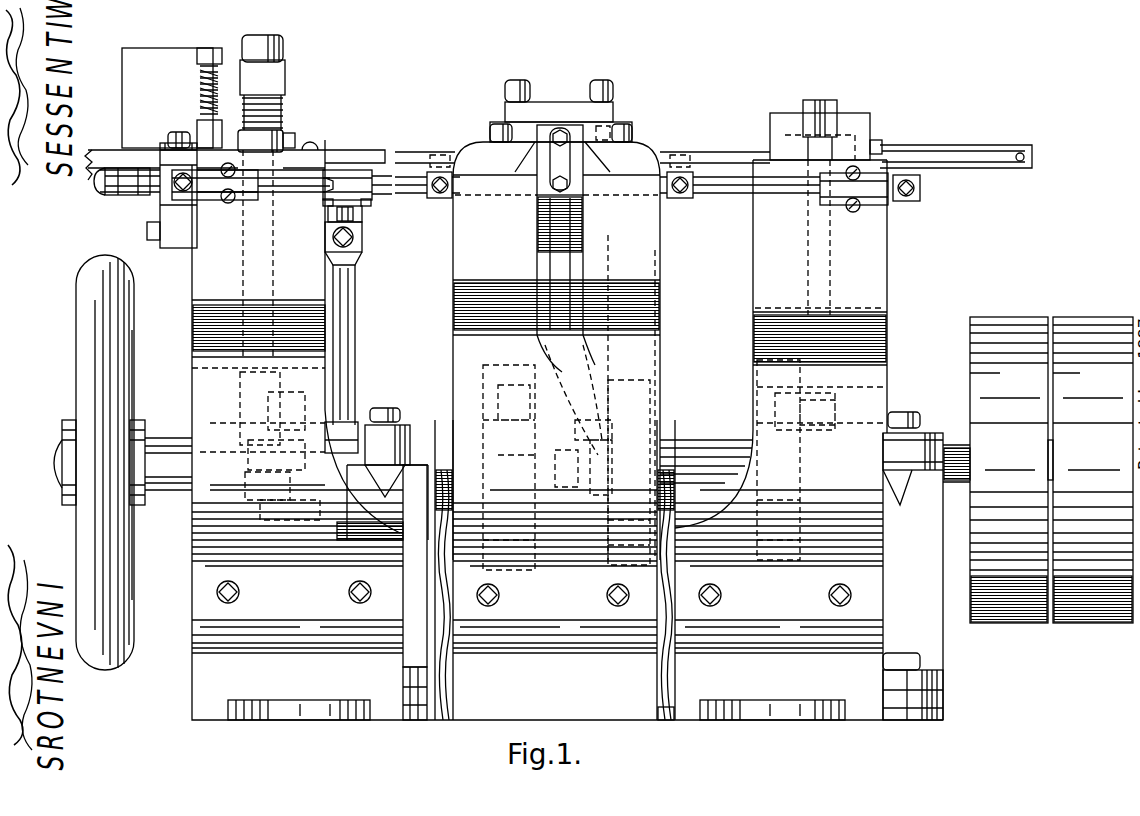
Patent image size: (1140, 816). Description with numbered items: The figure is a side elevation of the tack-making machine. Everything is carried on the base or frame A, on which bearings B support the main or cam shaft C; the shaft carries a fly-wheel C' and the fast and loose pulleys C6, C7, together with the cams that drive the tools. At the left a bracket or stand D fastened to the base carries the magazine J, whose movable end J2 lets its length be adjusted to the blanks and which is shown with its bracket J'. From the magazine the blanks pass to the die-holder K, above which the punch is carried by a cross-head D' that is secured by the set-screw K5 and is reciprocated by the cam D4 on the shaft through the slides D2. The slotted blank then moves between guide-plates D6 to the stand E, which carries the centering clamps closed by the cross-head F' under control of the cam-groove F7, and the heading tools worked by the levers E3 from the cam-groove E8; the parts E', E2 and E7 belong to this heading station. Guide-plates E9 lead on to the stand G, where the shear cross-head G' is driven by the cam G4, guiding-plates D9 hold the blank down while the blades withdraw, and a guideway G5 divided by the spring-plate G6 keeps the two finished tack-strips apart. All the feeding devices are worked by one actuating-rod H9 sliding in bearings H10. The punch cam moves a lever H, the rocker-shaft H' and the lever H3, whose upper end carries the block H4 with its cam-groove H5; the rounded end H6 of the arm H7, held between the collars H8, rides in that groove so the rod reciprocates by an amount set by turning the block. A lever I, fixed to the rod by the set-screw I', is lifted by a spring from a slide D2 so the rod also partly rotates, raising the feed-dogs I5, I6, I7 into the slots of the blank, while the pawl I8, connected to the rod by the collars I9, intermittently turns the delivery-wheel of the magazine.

The base or frame A is at (567, 442).
The bearings B is at (640, 564).
The main or cam shaft C is at (557, 456).
The fly-wheel C' is at (99, 462).
The fast pulley C6 is at (1011, 470).
The loose pulley C7 is at (1093, 470).
The bracket or stand D is at (296, 336).
The cross-head D' is at (262, 82).
The rods or slides D2 is at (248, 302).
The cam D4 is at (305, 460).
The guide-plates D6 is at (338, 160).
The guiding-plates D9 is at (762, 160).
The stand E is at (556, 351).
The stem guide E' is at (551, 160).
The cylinder head shoulders E2 is at (558, 157).
The levers E3 is at (572, 228).
The passage E7 is at (602, 438).
The cam-groove E8 is at (640, 530).
The guide-plates E9 is at (560, 148).
The cross-head F' is at (561, 111).
The cam-groove F7 is at (520, 448).
The stand G is at (781, 344).
The cross-head G' is at (826, 126).
The cam G4 is at (790, 490).
The guideway G5 is at (956, 147).
The spring-plate G6 is at (1018, 163).
The lever H is at (331, 237).
The rocker-shaft H' is at (860, 189).
The lever H3 is at (348, 317).
The block H4 is at (360, 214).
The cam-groove H5 is at (356, 228).
The roll or rounded end H6 is at (330, 216).
The arm H7 is at (355, 152).
The collars H8 is at (346, 209).
The actuating-rod or feed-rod H9 is at (288, 193).
The bearings H10 is at (220, 183).
The lever I is at (178, 195).
The set-screw I' is at (180, 195).
The feed-dog I5 is at (436, 200).
The feed-dog I6 is at (688, 200).
The feed-dog I7 is at (912, 201).
The feed dog or pawl I8 is at (128, 194).
The collars I9 is at (122, 173).
The magazine J is at (124, 215).
The bracket J' is at (172, 98).
The movable end J2 is at (200, 140).
The die-holder K is at (260, 141).
The set-screw K5 is at (290, 138).